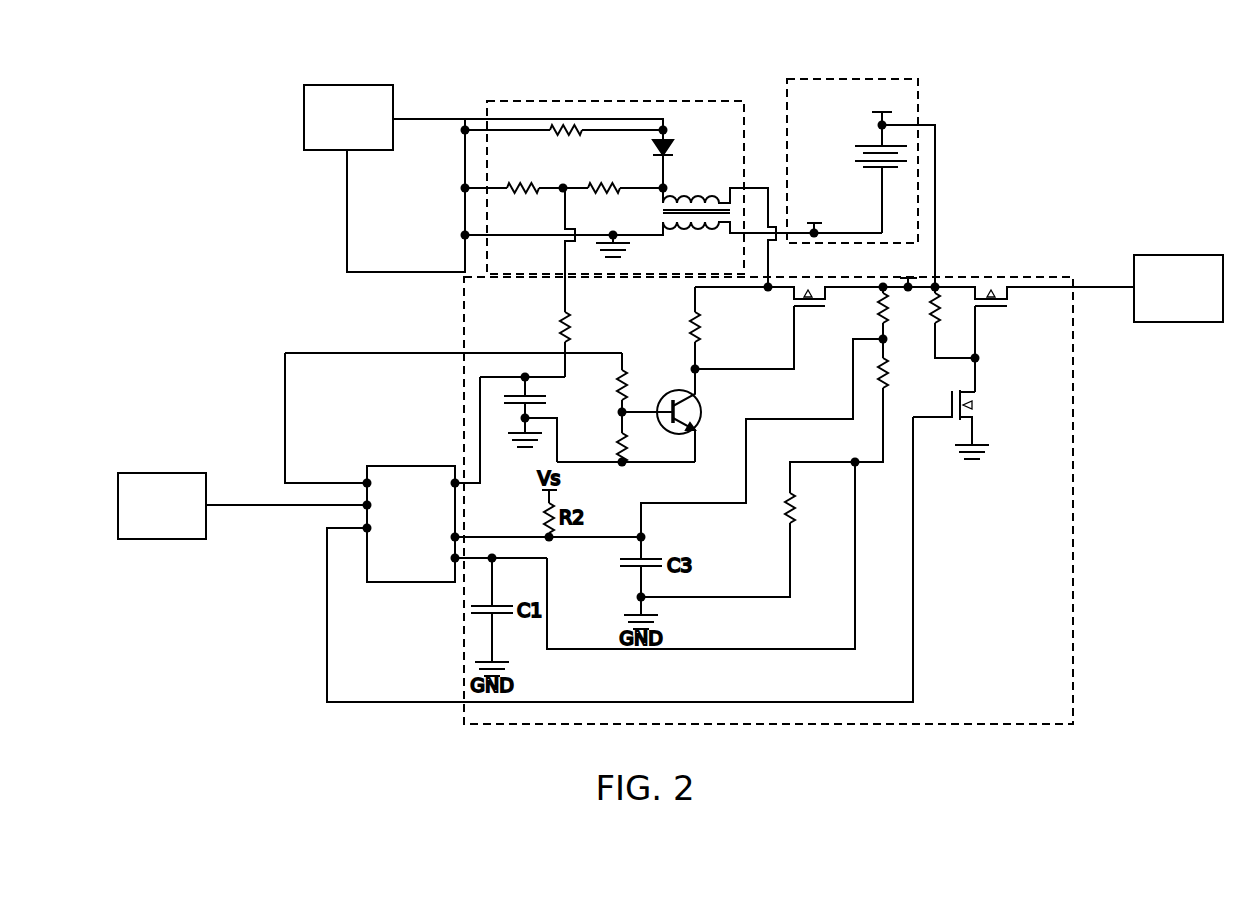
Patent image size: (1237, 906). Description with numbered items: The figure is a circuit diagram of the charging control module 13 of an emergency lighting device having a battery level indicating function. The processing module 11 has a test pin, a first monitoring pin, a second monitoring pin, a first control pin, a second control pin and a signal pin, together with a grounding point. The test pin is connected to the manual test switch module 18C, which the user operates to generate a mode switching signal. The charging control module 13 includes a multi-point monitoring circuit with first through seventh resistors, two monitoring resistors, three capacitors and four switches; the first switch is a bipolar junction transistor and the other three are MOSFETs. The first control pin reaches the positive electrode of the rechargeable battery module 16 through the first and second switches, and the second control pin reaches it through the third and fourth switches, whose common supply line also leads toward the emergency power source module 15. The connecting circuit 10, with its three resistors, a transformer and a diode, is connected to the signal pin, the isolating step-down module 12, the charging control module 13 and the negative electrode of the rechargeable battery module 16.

The connecting circuit 10 is at (590, 100).
The processing module 11 is at (413, 466).
The isolating step-down module 12 is at (330, 85).
The charging control module 13 is at (464, 335).
The emergency power source module 15 is at (1163, 255).
The rechargeable battery module 16 is at (918, 108).
The manual test switch module 18C is at (173, 473).